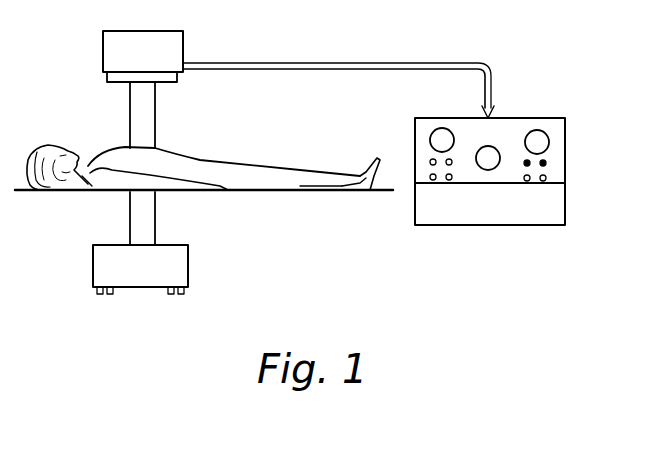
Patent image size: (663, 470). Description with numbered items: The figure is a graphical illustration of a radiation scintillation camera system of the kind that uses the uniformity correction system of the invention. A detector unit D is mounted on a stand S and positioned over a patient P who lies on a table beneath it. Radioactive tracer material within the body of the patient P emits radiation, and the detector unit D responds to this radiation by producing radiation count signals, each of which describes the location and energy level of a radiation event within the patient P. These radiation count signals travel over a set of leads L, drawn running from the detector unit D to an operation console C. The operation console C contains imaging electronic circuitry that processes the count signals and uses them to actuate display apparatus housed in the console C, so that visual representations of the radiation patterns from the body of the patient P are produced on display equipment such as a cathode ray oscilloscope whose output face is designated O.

The detector unit D is at (160, 31).
The stand S is at (165, 210).
The patient P is at (205, 160).
The leads L is at (308, 63).
The operation console C is at (523, 118).
The output face O is at (432, 137).